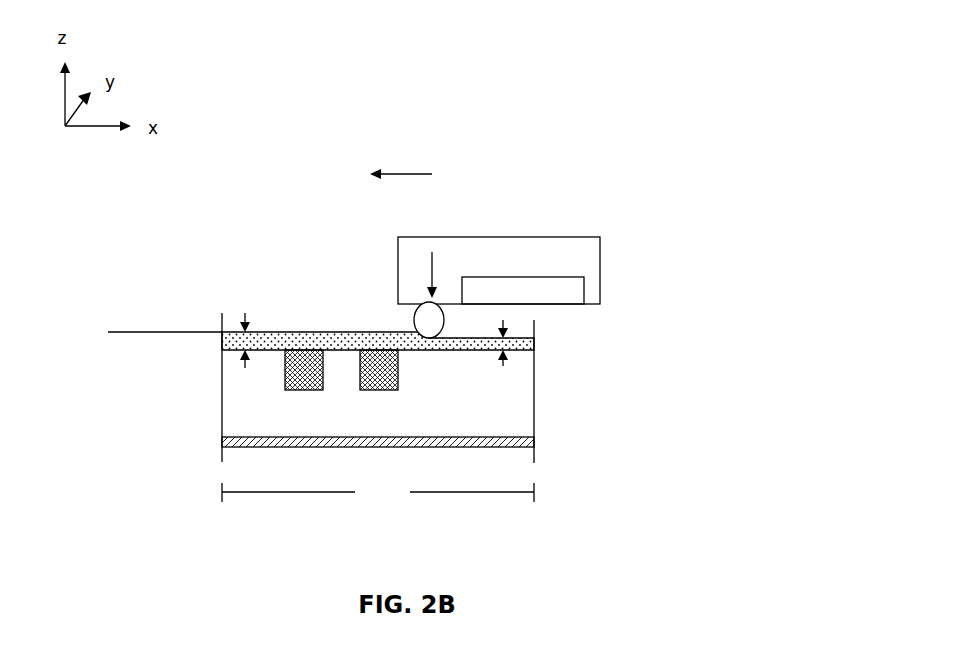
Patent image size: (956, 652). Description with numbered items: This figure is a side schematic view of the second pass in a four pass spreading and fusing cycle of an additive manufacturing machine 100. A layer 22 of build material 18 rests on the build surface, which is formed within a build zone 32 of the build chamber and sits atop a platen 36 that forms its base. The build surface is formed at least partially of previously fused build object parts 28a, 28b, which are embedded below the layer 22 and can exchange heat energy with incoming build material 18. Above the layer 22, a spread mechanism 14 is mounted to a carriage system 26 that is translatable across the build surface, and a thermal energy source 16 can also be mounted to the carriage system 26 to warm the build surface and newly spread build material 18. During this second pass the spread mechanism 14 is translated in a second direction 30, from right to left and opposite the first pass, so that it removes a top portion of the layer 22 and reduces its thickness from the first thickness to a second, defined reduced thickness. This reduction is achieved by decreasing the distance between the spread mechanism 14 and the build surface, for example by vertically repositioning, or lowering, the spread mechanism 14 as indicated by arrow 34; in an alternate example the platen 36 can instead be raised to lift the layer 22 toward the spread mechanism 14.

The additive manufacturing machine 100 is at (641, 103).
The second direction 30 is at (413, 168).
The layer 22 is at (230, 340).
The build material 18 is at (333, 343).
The spread mechanism 14 is at (414, 320).
The thermal energy source 16 is at (533, 272).
The carriage system 26 is at (603, 277).
The arrow 34 is at (422, 270).
The build object part 28a is at (305, 390).
The build object part 28b is at (377, 390).
The platen 36 is at (534, 442).
The build zone 32 is at (378, 490).